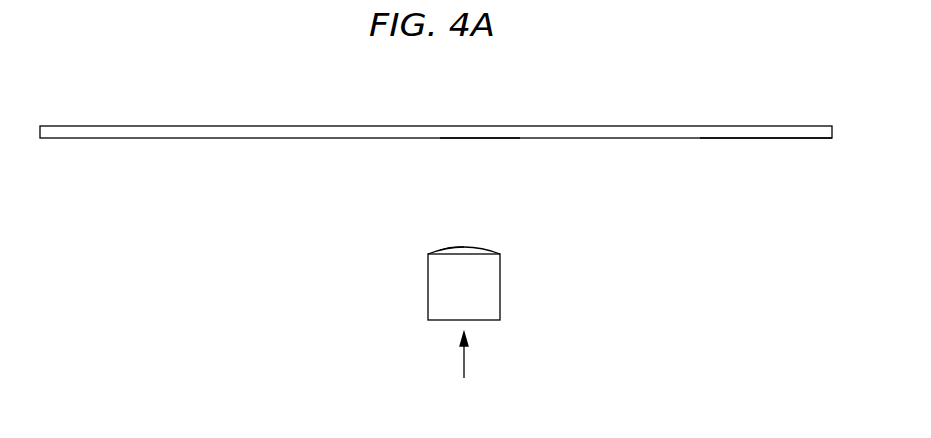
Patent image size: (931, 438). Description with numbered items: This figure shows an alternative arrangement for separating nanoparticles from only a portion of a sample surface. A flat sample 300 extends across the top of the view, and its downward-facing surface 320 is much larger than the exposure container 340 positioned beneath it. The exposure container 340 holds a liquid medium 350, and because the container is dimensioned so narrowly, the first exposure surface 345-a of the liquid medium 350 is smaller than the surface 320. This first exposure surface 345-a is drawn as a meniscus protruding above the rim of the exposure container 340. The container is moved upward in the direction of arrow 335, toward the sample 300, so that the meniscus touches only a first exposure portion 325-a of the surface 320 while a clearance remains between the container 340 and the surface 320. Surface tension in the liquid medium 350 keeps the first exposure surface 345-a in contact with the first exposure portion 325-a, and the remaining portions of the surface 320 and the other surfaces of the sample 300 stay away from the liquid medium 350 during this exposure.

The sample 300 is at (709, 126).
The surface 320 is at (705, 140).
The first exposure portion 325-a is at (456, 139).
The arrow 335 is at (465, 358).
The exposure container 340 is at (428, 275).
The first exposure surface 345-a is at (447, 247).
The liquid medium 350 is at (472, 250).